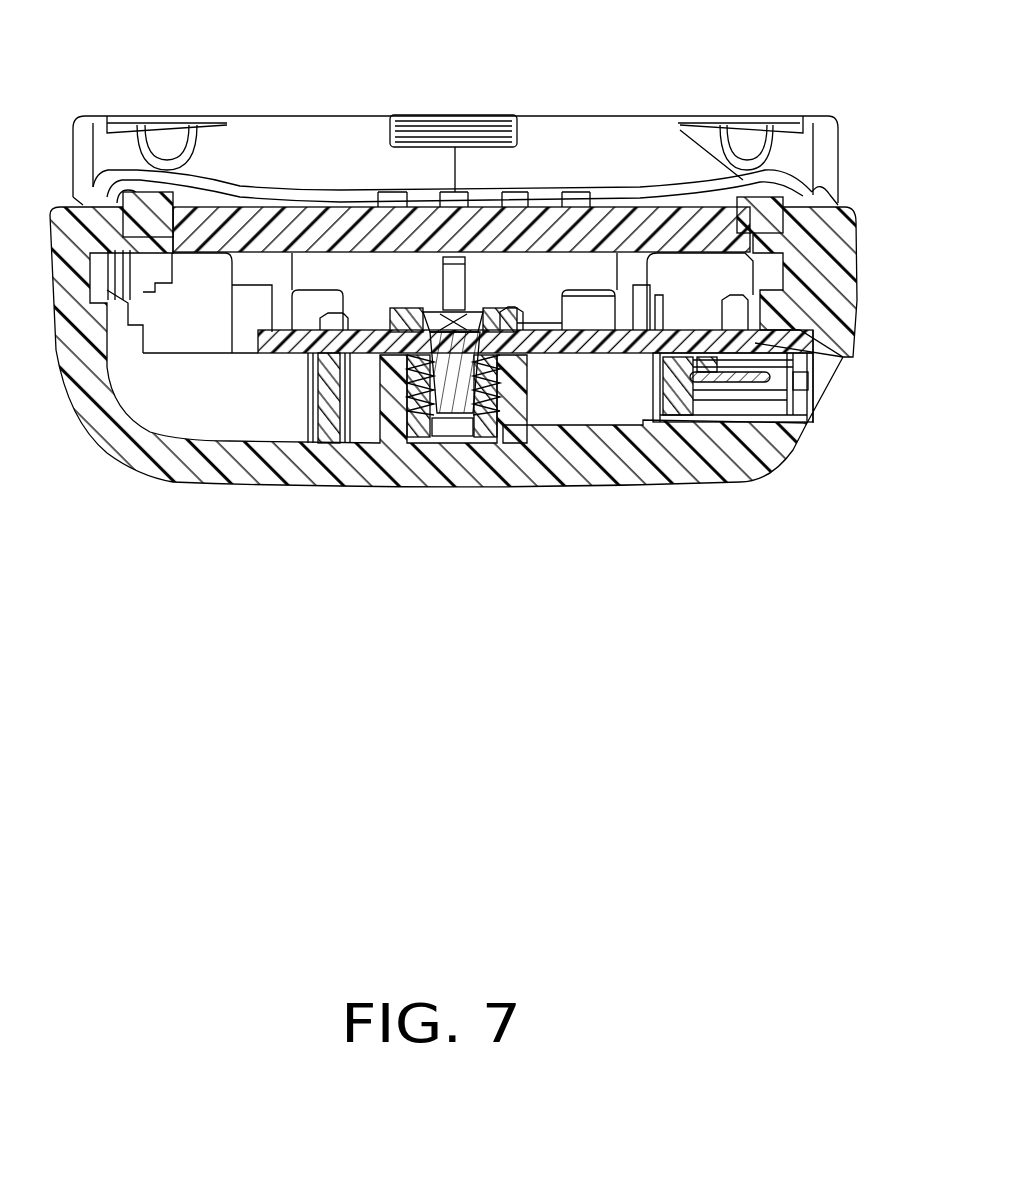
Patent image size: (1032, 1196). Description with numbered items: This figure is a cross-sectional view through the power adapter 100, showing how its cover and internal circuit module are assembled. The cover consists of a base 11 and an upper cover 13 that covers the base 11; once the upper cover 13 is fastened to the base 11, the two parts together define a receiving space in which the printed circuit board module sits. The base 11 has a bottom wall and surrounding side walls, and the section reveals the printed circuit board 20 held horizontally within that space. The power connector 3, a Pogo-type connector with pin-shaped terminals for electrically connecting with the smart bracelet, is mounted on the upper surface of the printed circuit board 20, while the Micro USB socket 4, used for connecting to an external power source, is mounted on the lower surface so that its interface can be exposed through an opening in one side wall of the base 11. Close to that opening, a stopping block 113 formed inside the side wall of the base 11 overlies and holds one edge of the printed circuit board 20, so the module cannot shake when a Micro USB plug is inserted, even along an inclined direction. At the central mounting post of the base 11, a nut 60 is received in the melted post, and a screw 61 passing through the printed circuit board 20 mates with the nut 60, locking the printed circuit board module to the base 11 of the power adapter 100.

The power adapter 100 is at (333, 68).
The upper cover 13 is at (225, 232).
The power connector 3 is at (517, 282).
The Micro USB socket 4 is at (657, 425).
The base 11 is at (712, 453).
The stopping block 113 is at (843, 357).
The printed circuit board 20 is at (803, 460).
The nut 60 is at (497, 405).
The screw 61 is at (440, 370).